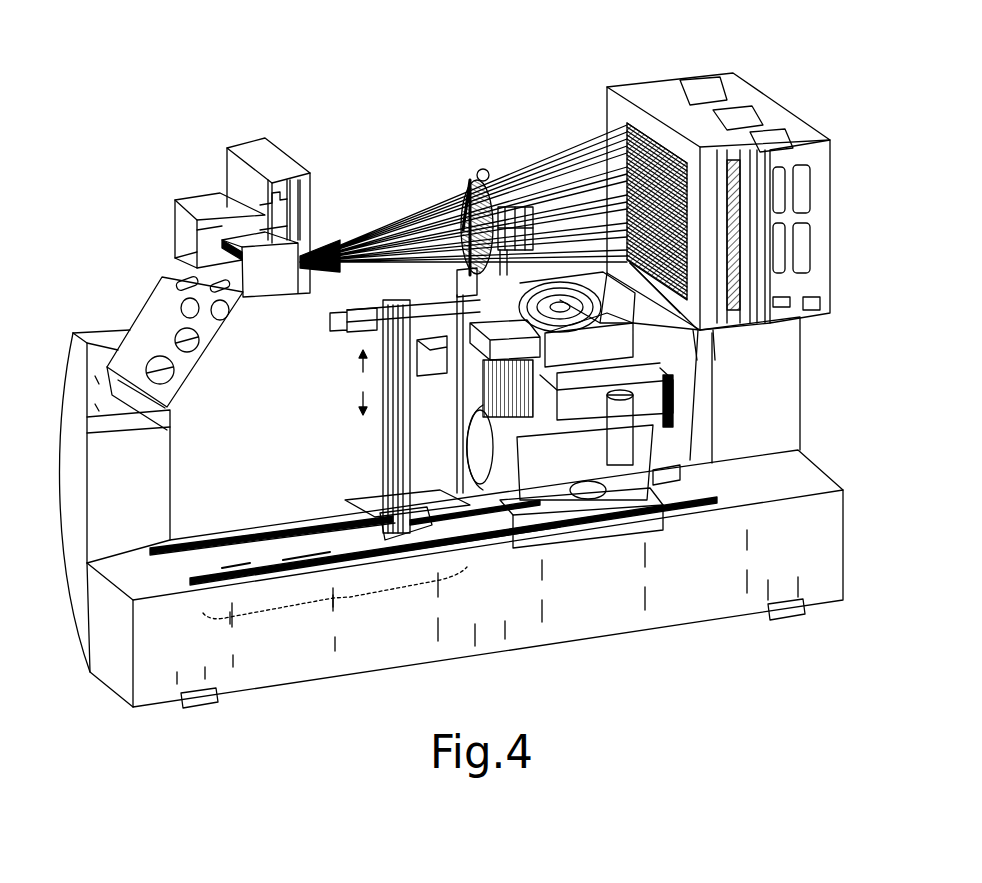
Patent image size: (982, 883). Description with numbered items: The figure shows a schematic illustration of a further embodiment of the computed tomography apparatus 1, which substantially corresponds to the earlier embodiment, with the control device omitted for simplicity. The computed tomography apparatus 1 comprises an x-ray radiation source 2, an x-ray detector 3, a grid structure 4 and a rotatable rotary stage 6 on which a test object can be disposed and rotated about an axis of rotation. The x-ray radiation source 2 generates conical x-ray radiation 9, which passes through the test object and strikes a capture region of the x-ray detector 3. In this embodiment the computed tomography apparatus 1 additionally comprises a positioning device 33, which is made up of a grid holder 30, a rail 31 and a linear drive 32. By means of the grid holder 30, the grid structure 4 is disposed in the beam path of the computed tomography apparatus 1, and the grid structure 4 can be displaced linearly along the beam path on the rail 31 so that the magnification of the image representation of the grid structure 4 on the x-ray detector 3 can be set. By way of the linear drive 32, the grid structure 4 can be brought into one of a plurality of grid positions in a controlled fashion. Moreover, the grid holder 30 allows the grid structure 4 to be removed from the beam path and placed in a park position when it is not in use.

The computed tomography apparatus 1 is at (117, 157).
The x-ray radiation source 2 is at (220, 190).
The x-ray detector 3 is at (645, 128).
The grid structure 4 is at (473, 180).
The rotatable rotary stage 6 is at (517, 205).
The conical x-ray radiation 9 is at (535, 163).
The grid holder 30 is at (383, 468).
The rail 31 is at (333, 545).
The linear drive 32 is at (356, 334).
The positioning device 33 is at (350, 597).